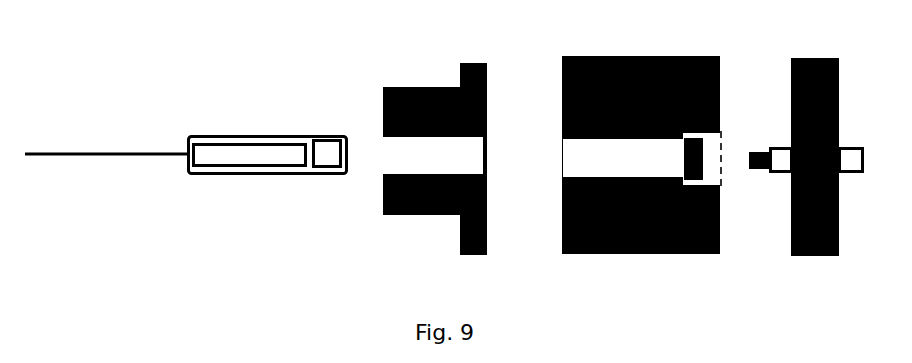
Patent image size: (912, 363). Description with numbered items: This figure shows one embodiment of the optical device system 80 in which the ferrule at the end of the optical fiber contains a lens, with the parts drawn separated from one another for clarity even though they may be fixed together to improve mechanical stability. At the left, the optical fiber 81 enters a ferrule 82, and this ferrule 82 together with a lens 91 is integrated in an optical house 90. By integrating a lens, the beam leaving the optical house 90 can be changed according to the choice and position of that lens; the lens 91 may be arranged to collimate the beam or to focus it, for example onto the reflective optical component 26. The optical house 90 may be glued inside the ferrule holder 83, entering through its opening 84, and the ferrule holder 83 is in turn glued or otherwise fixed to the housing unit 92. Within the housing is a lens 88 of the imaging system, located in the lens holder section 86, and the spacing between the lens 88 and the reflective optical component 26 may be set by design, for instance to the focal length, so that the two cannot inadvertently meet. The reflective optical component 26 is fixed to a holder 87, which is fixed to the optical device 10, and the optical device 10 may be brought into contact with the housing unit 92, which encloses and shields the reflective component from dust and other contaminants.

The optical device system 80 is at (268, 91).
The optical fiber 81 is at (115, 162).
The ferrule 82 is at (215, 165).
The optical house 90 is at (265, 182).
The lens 91 is at (323, 165).
The ferrule holder 83 is at (410, 223).
The opening 84 is at (383, 138).
The housing unit 92 is at (602, 255).
The lens 88 is at (707, 153).
The lens holder section 86 is at (722, 175).
The optical device 10 is at (808, 256).
The reflective optical component 26 is at (757, 147).
The holder 87 is at (857, 182).